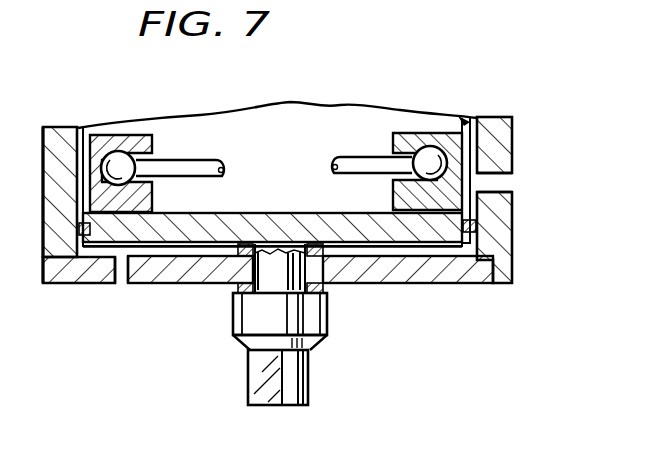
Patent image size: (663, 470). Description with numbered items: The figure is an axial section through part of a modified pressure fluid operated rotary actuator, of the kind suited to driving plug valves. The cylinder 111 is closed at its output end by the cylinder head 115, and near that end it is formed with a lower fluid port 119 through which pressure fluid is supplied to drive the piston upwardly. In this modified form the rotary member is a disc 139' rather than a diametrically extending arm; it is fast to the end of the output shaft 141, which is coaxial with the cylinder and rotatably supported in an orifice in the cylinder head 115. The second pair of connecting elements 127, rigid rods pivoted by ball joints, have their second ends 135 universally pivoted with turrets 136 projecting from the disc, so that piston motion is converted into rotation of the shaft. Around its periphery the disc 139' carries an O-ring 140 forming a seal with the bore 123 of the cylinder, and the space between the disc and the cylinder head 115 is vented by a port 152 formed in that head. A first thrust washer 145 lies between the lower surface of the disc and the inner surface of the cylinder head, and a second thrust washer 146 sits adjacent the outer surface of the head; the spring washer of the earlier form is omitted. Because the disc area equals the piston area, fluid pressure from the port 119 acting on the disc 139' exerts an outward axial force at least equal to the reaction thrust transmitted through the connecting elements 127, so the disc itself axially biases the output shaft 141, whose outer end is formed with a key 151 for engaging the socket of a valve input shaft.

The cylinder 111 is at (513, 145).
The cylinder head 115 is at (182, 272).
The fluid port 119 is at (506, 185).
The bore 123 is at (463, 118).
The second pair of connecting elements 127 is at (330, 166).
The second ends 135 is at (108, 152).
The turrets 136 is at (143, 192).
The disc 139' is at (242, 276).
The O-ring 140 is at (474, 227).
The output shaft 141 is at (303, 349).
The first thrust washer 145 is at (325, 245).
The second thrust washer 146 is at (334, 288).
The key 151 is at (263, 380).
The port 152 is at (122, 278).